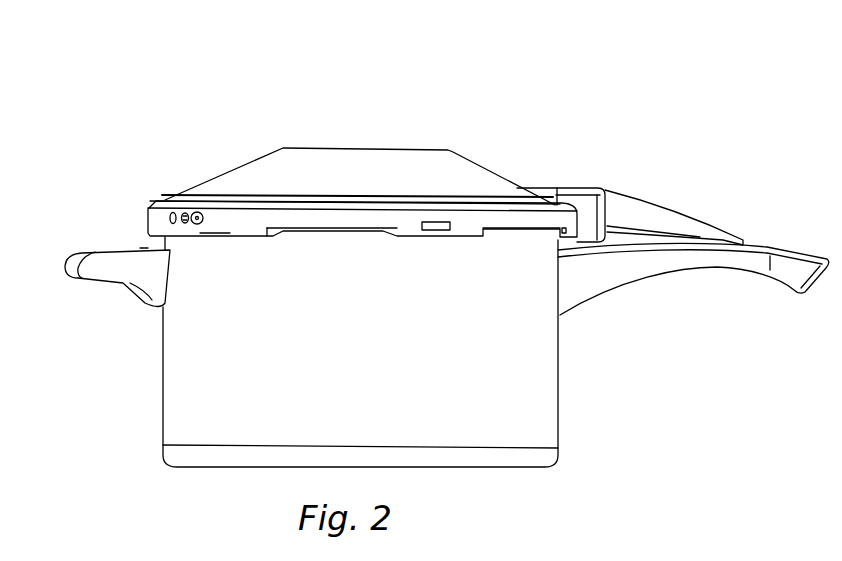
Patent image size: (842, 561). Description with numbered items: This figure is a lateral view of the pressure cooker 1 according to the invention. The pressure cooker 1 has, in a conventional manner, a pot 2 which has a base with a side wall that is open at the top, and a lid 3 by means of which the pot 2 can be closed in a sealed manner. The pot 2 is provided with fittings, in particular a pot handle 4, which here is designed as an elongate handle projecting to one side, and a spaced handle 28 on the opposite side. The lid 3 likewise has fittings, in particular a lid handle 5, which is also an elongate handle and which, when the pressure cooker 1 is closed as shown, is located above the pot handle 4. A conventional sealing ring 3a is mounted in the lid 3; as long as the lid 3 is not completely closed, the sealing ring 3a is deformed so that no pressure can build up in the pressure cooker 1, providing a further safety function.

The pressure cooker 1 is at (516, 180).
The pot 2 is at (558, 372).
The lid 3 is at (458, 153).
The sealing ring 3a is at (214, 223).
The pot handle 4 is at (657, 273).
The lid handle 5 is at (667, 203).
The spaced handle 28 is at (123, 265).